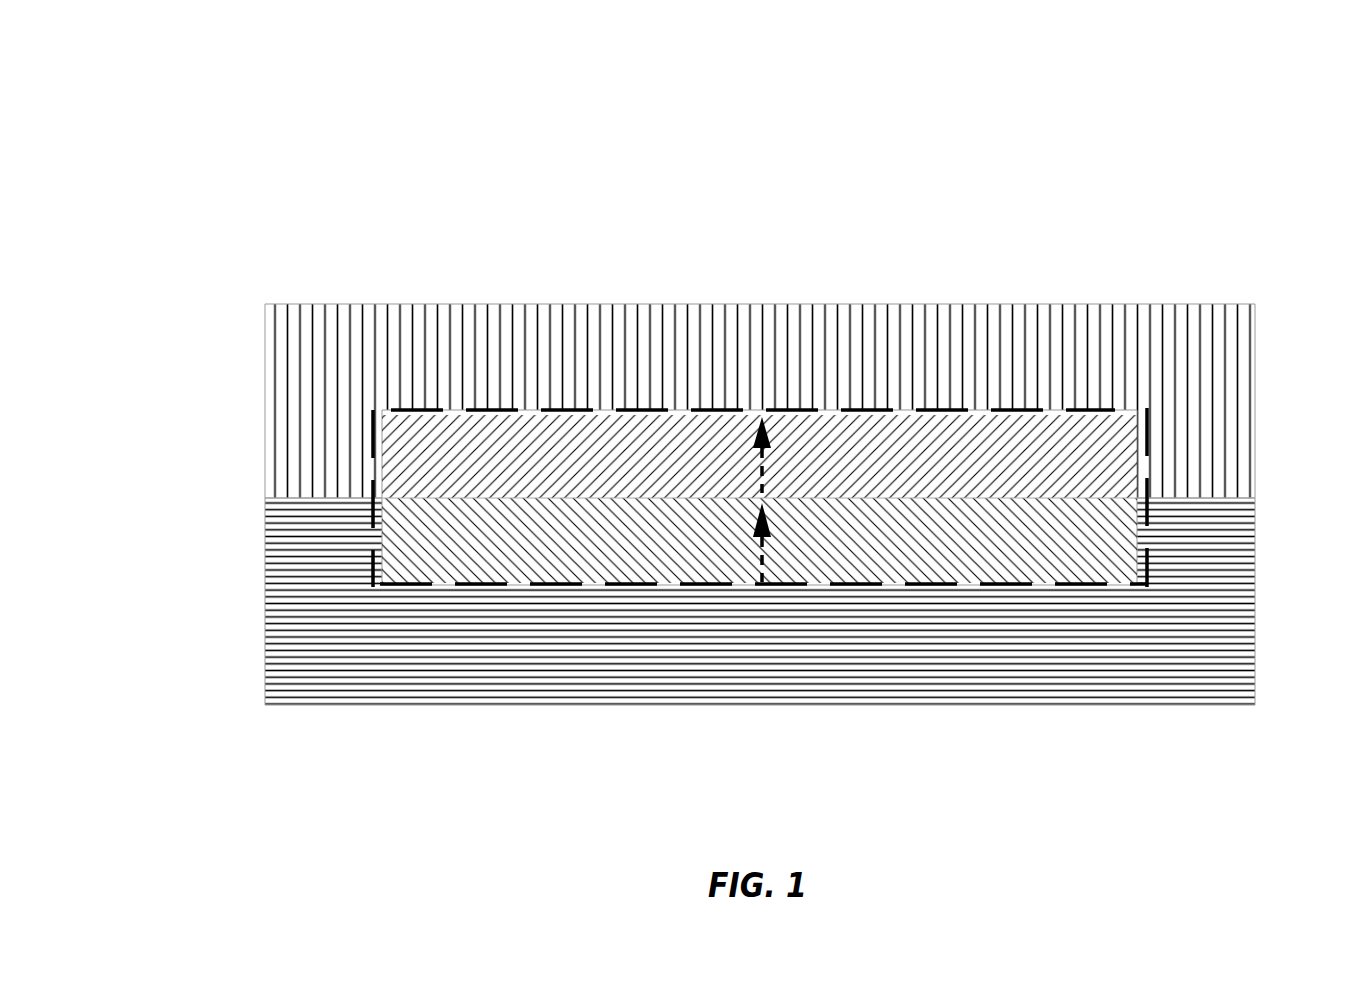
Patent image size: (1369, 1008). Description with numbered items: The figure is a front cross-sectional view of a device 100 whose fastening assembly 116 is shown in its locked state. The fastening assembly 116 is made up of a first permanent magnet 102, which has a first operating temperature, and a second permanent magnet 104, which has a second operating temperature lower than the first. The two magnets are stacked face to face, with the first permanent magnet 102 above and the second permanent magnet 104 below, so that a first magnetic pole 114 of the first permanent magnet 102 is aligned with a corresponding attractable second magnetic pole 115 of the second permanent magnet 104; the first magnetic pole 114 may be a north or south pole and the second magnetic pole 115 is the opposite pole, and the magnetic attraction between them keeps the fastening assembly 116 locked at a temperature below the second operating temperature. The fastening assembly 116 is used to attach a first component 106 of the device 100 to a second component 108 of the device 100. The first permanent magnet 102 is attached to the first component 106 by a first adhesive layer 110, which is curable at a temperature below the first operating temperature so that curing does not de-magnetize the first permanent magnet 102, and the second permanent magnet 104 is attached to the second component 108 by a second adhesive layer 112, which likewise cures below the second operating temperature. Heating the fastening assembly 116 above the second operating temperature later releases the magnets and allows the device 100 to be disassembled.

The device 100 is at (142, 91).
The first permanent magnet 102 is at (475, 475).
The second permanent magnet 104 is at (450, 530).
The first component 106 is at (660, 355).
The second component 108 is at (658, 640).
The first adhesive layer 110 is at (540, 410).
The second adhesive layer 112 is at (620, 585).
The first magnetic pole 114 is at (763, 498).
The second magnetic pole 115 is at (763, 513).
The fastening assembly 116 is at (880, 362).